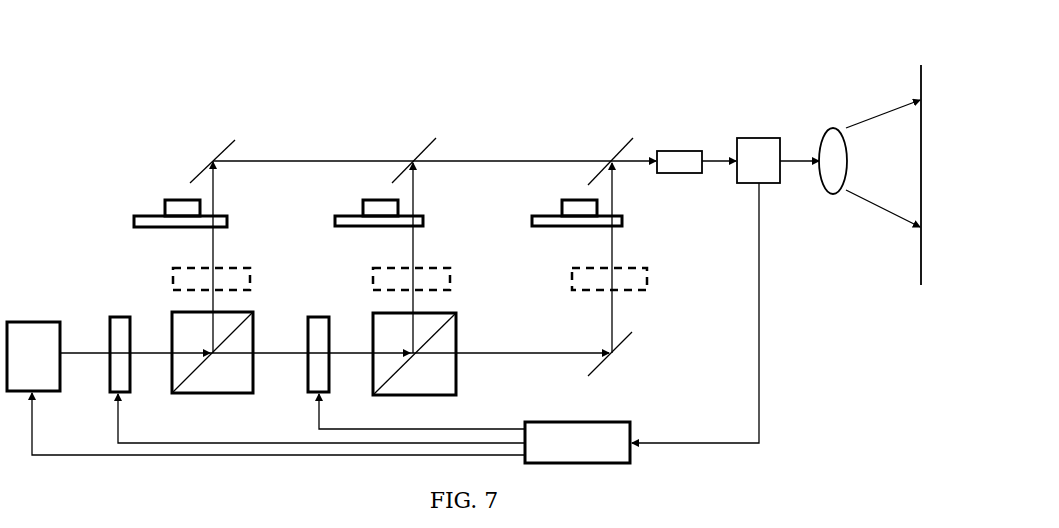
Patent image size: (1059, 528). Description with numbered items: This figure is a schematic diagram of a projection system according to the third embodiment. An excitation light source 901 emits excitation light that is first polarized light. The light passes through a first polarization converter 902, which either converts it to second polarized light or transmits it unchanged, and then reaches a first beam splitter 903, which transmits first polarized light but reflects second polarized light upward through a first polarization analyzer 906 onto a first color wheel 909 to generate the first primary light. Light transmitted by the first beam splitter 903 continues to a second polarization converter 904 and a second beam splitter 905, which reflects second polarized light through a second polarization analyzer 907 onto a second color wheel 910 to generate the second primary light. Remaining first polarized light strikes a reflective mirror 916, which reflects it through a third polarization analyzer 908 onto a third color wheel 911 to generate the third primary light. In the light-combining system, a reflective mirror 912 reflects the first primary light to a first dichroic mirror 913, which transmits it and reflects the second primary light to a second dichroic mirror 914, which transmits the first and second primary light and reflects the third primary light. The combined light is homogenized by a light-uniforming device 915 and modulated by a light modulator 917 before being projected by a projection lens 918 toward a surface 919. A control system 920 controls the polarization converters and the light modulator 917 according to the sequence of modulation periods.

The excitation light source 901 is at (35, 330).
The first polarization converter 902 is at (118, 324).
The first beam splitter 903 is at (216, 383).
The second polarization converter 904 is at (318, 326).
The second beam splitter 905 is at (442, 377).
The first polarization analyzer 906 is at (248, 286).
The second polarization analyzer 907 is at (450, 286).
The third polarization analyzer 908 is at (647, 286).
The first color wheel 909 is at (153, 213).
The second color wheel 910 is at (427, 215).
The third color wheel 911 is at (622, 215).
The reflective mirror 912 is at (216, 146).
The first dichroic mirror 913 is at (420, 144).
The second dichroic mirror 914 is at (617, 146).
The light-uniforming device 915 is at (689, 157).
The reflective mirror 916 is at (630, 338).
The light modulator 917 is at (757, 148).
The projection lens 918 is at (828, 138).
The screen 919 is at (921, 278).
The control system 920 is at (602, 438).